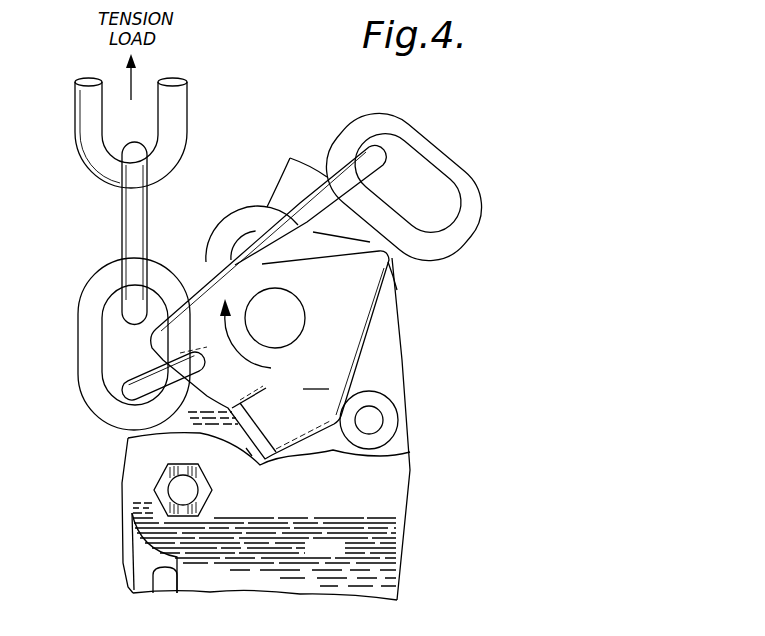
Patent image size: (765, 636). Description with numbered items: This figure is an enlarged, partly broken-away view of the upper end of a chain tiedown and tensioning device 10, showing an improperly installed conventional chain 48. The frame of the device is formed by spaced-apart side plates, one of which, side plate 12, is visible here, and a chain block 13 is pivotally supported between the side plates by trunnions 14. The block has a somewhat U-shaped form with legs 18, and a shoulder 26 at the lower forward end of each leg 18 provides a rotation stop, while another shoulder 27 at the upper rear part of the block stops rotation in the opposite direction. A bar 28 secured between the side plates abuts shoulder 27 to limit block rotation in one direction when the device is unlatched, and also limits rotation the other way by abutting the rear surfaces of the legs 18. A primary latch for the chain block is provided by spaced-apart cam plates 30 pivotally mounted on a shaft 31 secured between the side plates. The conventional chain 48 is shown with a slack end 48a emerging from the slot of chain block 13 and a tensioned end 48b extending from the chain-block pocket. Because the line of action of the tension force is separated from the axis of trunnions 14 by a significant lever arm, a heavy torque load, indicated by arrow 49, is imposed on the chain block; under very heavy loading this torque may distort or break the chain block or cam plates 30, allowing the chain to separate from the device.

The chain tiedown and tensioning device 10 is at (412, 572).
The side plate 12 is at (264, 499).
The chain block 13 is at (368, 336).
The trunnions 14 is at (298, 305).
The leg 18 is at (316, 378).
The shoulder 26 is at (268, 436).
The shoulder 27 is at (396, 287).
The bar 28 is at (395, 410).
The cam plate 30 is at (252, 452).
The shaft 31 is at (177, 488).
The conventional chain 48 is at (189, 135).
The slack end 48a is at (290, 158).
The tensioned end 48b is at (101, 428).
The arrow 49 is at (230, 335).